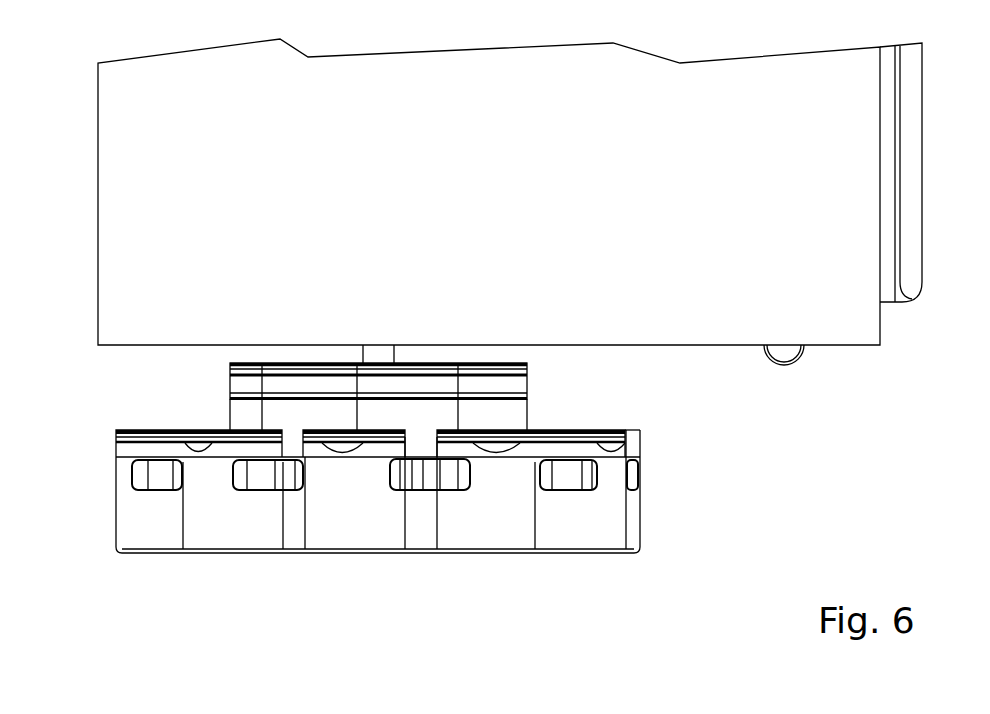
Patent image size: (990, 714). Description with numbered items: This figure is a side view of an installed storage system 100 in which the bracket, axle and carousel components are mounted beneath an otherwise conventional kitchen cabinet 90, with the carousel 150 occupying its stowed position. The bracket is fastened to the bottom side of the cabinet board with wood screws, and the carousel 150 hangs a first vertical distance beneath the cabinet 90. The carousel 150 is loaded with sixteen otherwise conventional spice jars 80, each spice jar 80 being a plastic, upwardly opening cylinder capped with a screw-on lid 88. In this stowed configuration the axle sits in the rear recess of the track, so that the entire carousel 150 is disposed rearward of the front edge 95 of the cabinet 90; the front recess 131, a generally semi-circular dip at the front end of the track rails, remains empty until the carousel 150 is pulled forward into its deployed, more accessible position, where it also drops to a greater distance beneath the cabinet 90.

The installed storage system 100 is at (129, 590).
The kitchen cabinet 90 is at (115, 318).
The front edge of the cabinet 95 is at (884, 326).
The front recess 131 is at (793, 364).
The screw-on lid 88 is at (596, 430).
The spice jar 80 is at (378, 529).
The carousel 150 is at (460, 497).